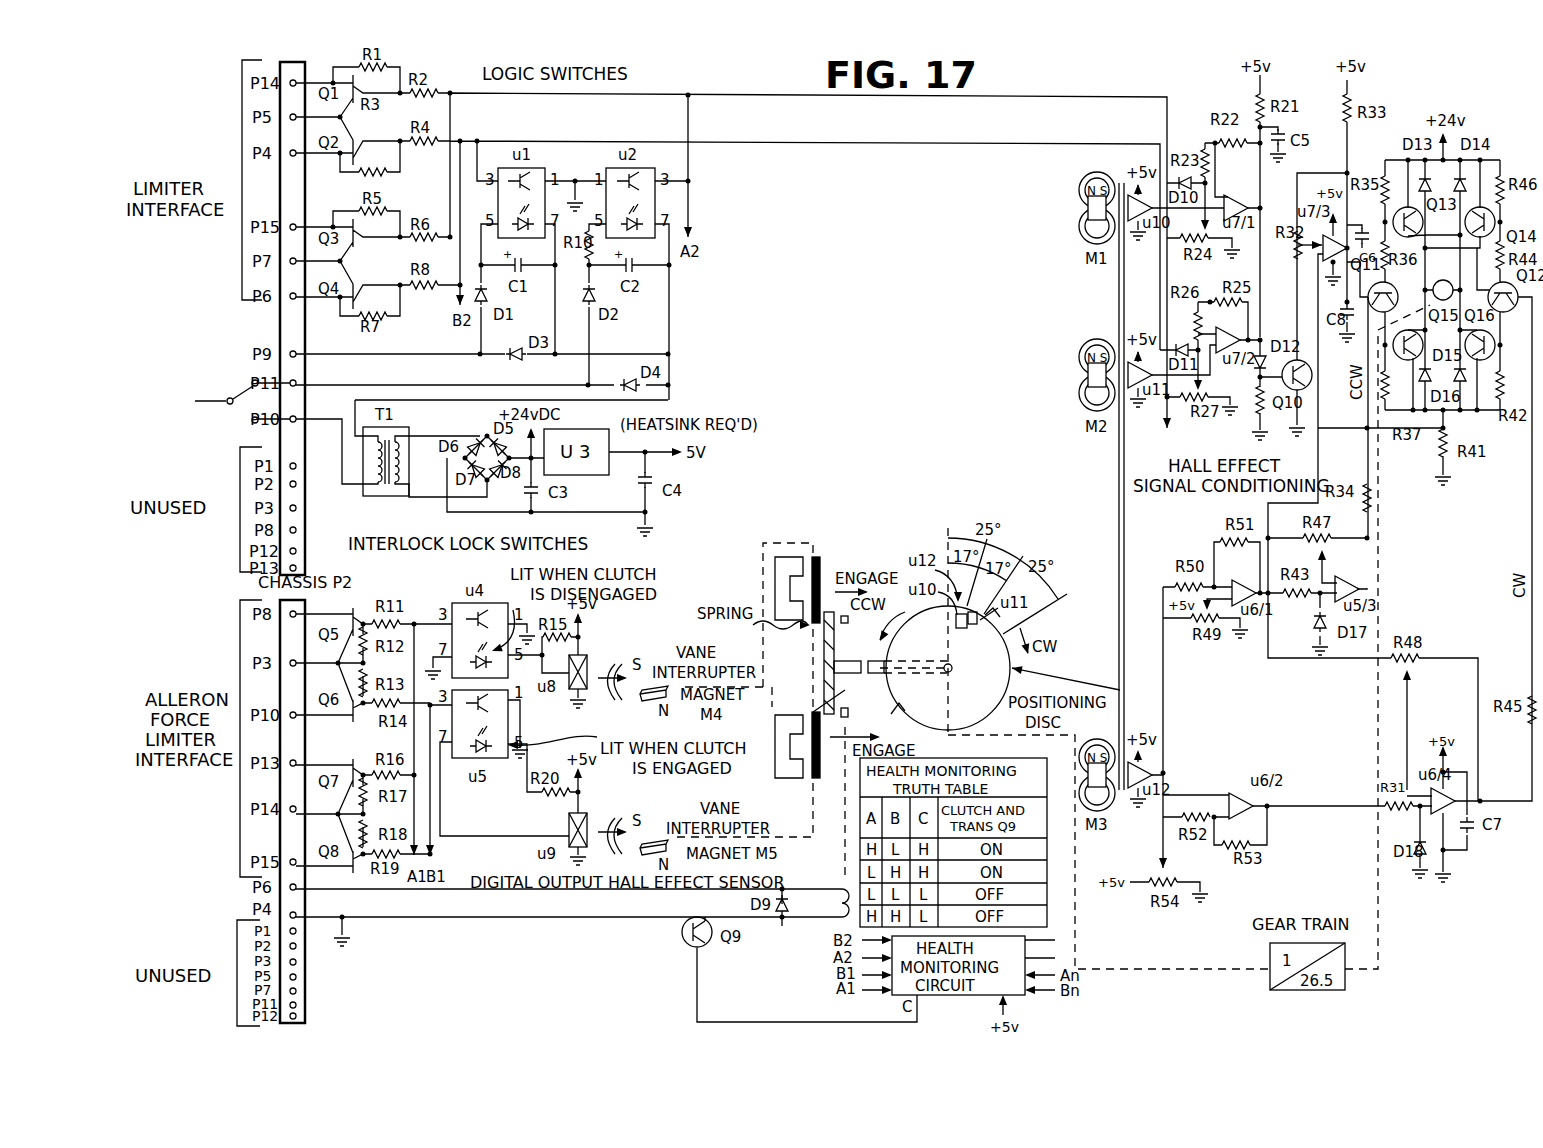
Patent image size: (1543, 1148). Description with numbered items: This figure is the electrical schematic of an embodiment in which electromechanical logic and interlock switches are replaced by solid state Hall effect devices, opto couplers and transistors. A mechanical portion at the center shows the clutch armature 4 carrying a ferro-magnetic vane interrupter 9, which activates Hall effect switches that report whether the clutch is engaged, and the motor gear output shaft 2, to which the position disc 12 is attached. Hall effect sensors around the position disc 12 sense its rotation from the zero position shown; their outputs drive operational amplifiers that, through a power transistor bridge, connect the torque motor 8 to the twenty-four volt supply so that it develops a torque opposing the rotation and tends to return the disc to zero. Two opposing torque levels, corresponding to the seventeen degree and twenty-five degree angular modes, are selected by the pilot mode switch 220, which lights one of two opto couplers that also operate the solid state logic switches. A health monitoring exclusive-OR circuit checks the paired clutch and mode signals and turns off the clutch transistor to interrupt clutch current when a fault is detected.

The motor gear output shaft 2 is at (850, 660).
The clutch armature 4 is at (835, 663).
The torque motor 8 is at (1443, 280).
The vane interrupter 9 is at (816, 576).
The position disc 12 is at (891, 710).
The pilot mode switch 220 is at (238, 382).